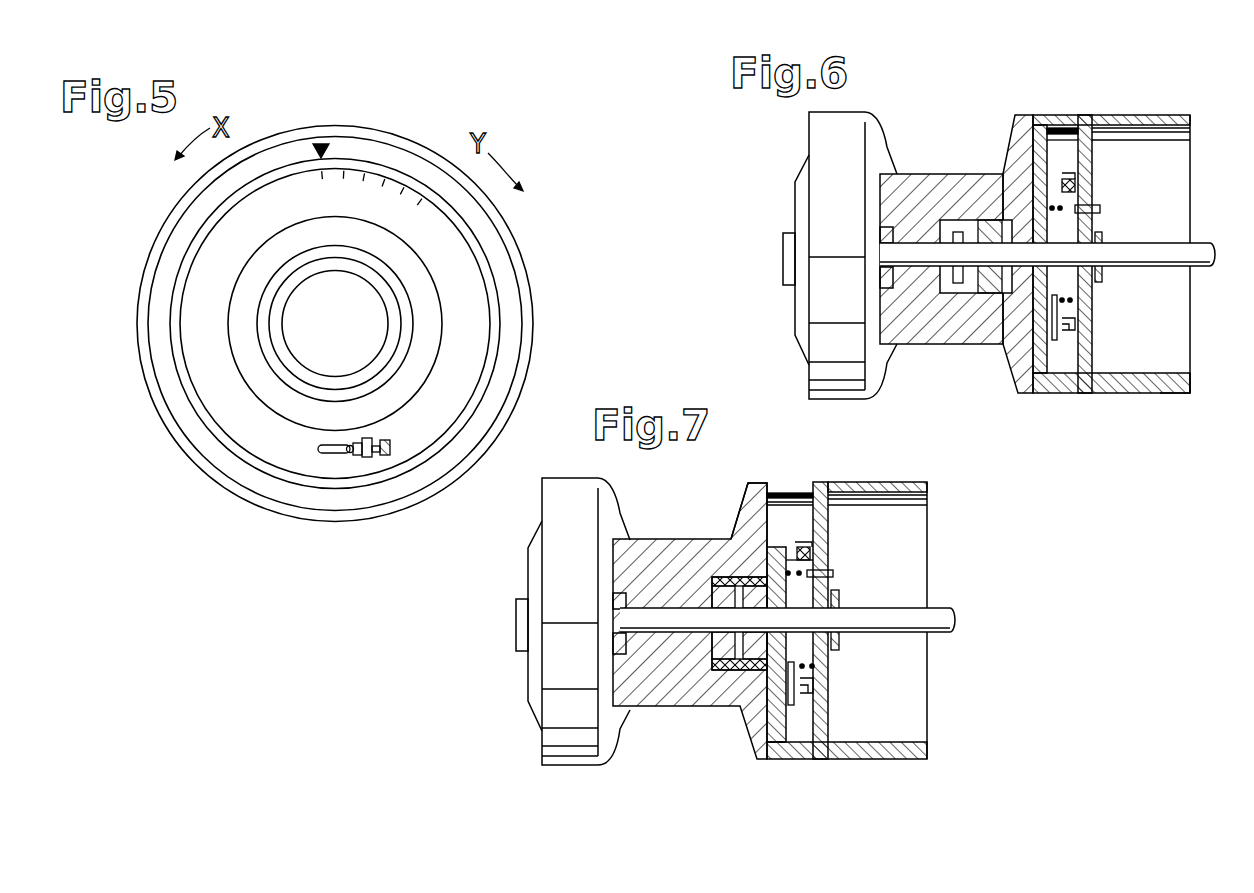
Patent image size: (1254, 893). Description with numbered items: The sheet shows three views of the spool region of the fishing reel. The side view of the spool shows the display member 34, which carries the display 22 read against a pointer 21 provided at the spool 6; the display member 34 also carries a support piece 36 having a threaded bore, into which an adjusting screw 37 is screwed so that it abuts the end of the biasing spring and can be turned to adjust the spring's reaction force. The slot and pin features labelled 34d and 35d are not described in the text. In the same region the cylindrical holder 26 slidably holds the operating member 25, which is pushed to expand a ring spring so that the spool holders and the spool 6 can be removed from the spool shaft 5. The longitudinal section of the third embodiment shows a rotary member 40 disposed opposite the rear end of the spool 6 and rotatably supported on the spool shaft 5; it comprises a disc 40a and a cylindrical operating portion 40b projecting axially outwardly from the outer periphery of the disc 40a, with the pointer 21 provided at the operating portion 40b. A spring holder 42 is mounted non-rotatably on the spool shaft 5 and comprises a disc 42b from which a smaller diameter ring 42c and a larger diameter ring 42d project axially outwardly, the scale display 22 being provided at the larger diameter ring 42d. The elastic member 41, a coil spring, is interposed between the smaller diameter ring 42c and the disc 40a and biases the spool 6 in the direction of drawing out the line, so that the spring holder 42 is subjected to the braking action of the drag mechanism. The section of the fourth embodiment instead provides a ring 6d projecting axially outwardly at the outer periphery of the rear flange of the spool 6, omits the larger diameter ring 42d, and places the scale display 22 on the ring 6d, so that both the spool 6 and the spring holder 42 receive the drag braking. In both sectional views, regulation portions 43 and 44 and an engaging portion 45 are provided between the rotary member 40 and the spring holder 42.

In FIG. 6, the spool shaft 5 is at (1203, 243).
In FIG. 7, the spool shaft 5 is at (940, 608).
In FIG. 5, the spool 6 is at (350, 118).
In FIG. 6, the spool 6 is at (931, 174).
In FIG. 7, the spool 6 is at (668, 545).
In FIG. 7, the ring 6d is at (781, 486).
In FIG. 5, the pointer 21 is at (320, 143).
In FIG. 6, the pointer 21 is at (1088, 113).
In FIG. 7, the pointer 21 is at (828, 481).
In FIG. 5, the scale display 22 is at (377, 180).
In FIG. 6, the scale display 22 is at (1063, 113).
In FIG. 7, the scale display 22 is at (798, 481).
In FIG. 5, the operating member 25 is at (285, 325).
In FIG. 5, the cylindrical holder 26 is at (240, 298).
In FIG. 5, the display member 34 is at (213, 248).
In FIG. 5, the slot 34d is at (327, 453).
In FIG. 5, the pin 35d is at (348, 453).
In FIG. 5, the support piece 36 is at (367, 453).
In FIG. 5, the adjusting screw 37 is at (385, 453).
In FIG. 6, the rotary member 40 is at (1132, 112).
In FIG. 7, the rotary member 40 is at (898, 481).
In FIG. 6, the disc 40a is at (1095, 358).
In FIG. 6, the cylindrical operating portion 40b is at (1175, 393).
In FIG. 6, the elastic member 41 is at (1100, 209).
In FIG. 7, the elastic member 41 is at (833, 574).
In FIG. 6, the spring holder 42 is at (1040, 115).
In FIG. 7, the spring holder 42 is at (777, 550).
In FIG. 6, the disc 42b is at (1036, 353).
In FIG. 7, the disc 42b is at (778, 668).
In FIG. 6, the smaller diameter ring 42c is at (1078, 322).
In FIG. 7, the smaller diameter ring 42c is at (802, 694).
In FIG. 6, the larger diameter ring 42d is at (990, 222).
In FIG. 7, the larger diameter ring 42d is at (727, 652).
In FIG. 6, the regulation portion 43 is at (1065, 176).
In FIG. 7, the regulation portion 43 is at (800, 545).
In FIG. 6, the regulation portion 44 is at (1086, 343).
In FIG. 7, the regulation portion 44 is at (812, 703).
In FIG. 6, the engaging portion 45 is at (1076, 187).
In FIG. 7, the engaging portion 45 is at (811, 554).